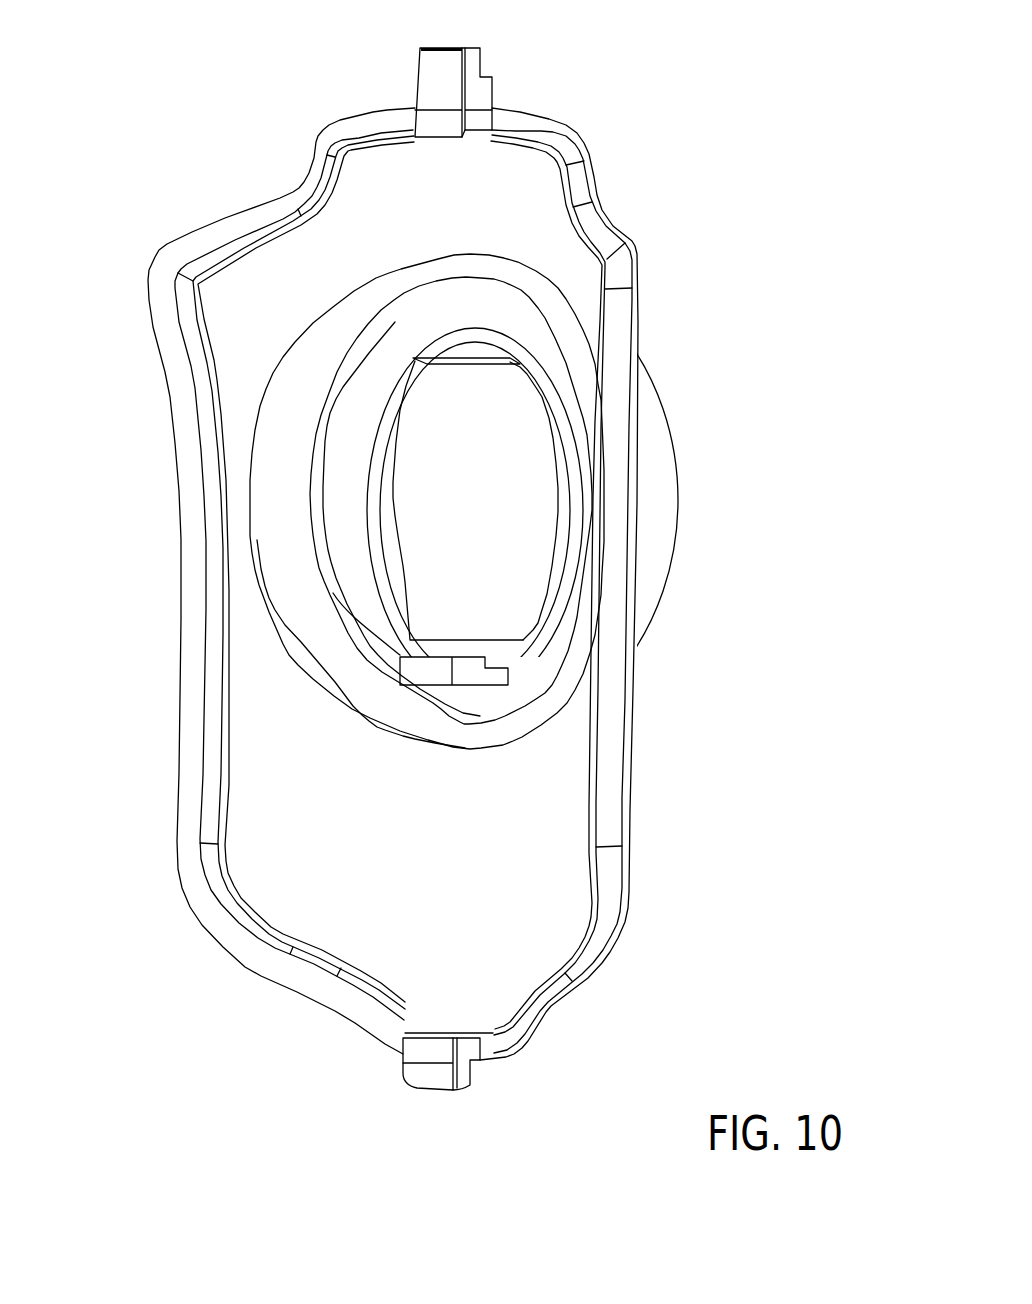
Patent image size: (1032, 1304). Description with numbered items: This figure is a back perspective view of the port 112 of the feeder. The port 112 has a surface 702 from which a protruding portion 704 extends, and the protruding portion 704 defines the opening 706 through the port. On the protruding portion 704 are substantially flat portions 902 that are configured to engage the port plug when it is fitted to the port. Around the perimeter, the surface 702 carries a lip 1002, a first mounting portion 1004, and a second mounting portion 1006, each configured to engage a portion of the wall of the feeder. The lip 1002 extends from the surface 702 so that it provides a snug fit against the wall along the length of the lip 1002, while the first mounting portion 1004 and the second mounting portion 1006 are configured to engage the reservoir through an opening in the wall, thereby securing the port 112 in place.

The port 112 is at (593, 65).
The surface 702 is at (622, 920).
The protruding portion 704 is at (678, 468).
The opening 706 is at (425, 476).
The substantially flat portions 902 is at (467, 362).
The lip 1002 is at (232, 955).
The first mounting portion 1004 is at (413, 70).
The second mounting portion 1006 is at (403, 1077).